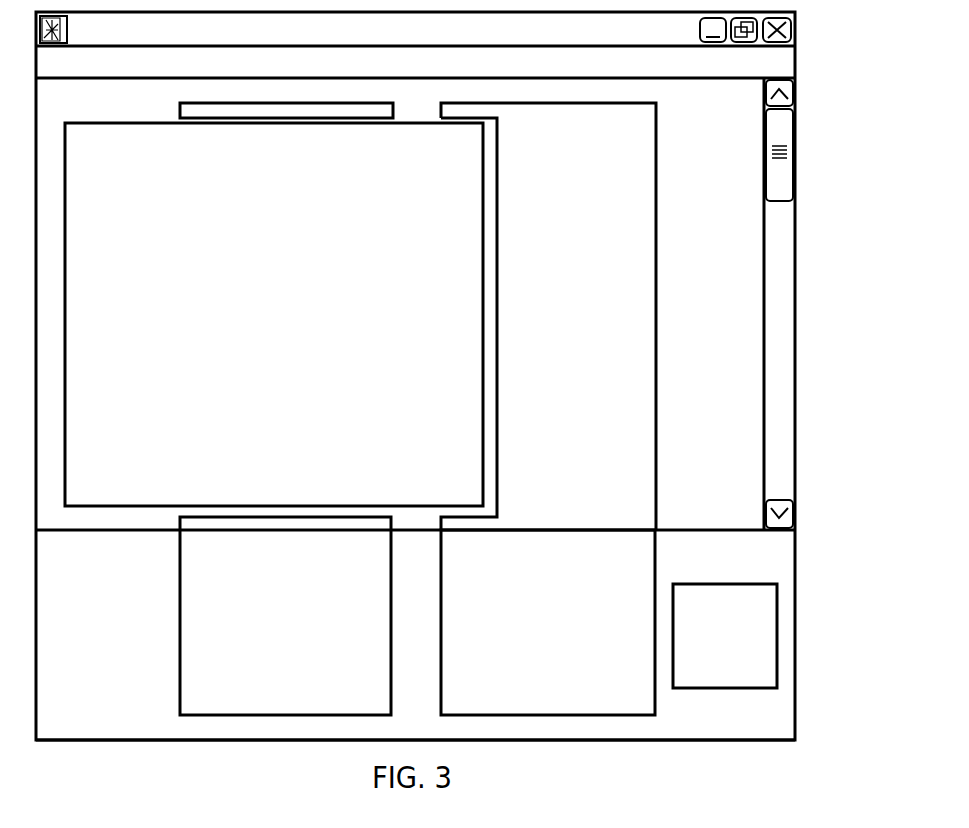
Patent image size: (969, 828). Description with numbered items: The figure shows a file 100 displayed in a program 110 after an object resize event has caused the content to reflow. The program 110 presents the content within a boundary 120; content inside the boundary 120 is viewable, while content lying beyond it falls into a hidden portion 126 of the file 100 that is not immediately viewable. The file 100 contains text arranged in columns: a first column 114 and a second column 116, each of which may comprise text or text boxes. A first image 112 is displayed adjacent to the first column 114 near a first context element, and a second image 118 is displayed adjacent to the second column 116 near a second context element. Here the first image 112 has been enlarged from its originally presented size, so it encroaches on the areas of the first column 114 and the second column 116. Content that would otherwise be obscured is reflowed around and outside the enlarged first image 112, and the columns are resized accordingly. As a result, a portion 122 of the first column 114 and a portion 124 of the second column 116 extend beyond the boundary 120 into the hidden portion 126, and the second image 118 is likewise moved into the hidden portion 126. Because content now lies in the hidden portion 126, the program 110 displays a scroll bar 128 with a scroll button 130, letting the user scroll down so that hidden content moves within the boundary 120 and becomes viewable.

The file 100 is at (719, 122).
The program 110 is at (797, 53).
The first image 112 is at (90, 123).
The first column 114 is at (180, 658).
The second column 116 is at (657, 410).
The second image 118 is at (725, 582).
The boundary 120 is at (796, 345).
The portion of first column 122 is at (180, 680).
The portion of second column 124 is at (657, 695).
The hidden portion 126 is at (132, 740).
The scroll bar 128 is at (796, 233).
The scroll button 130 is at (796, 131).